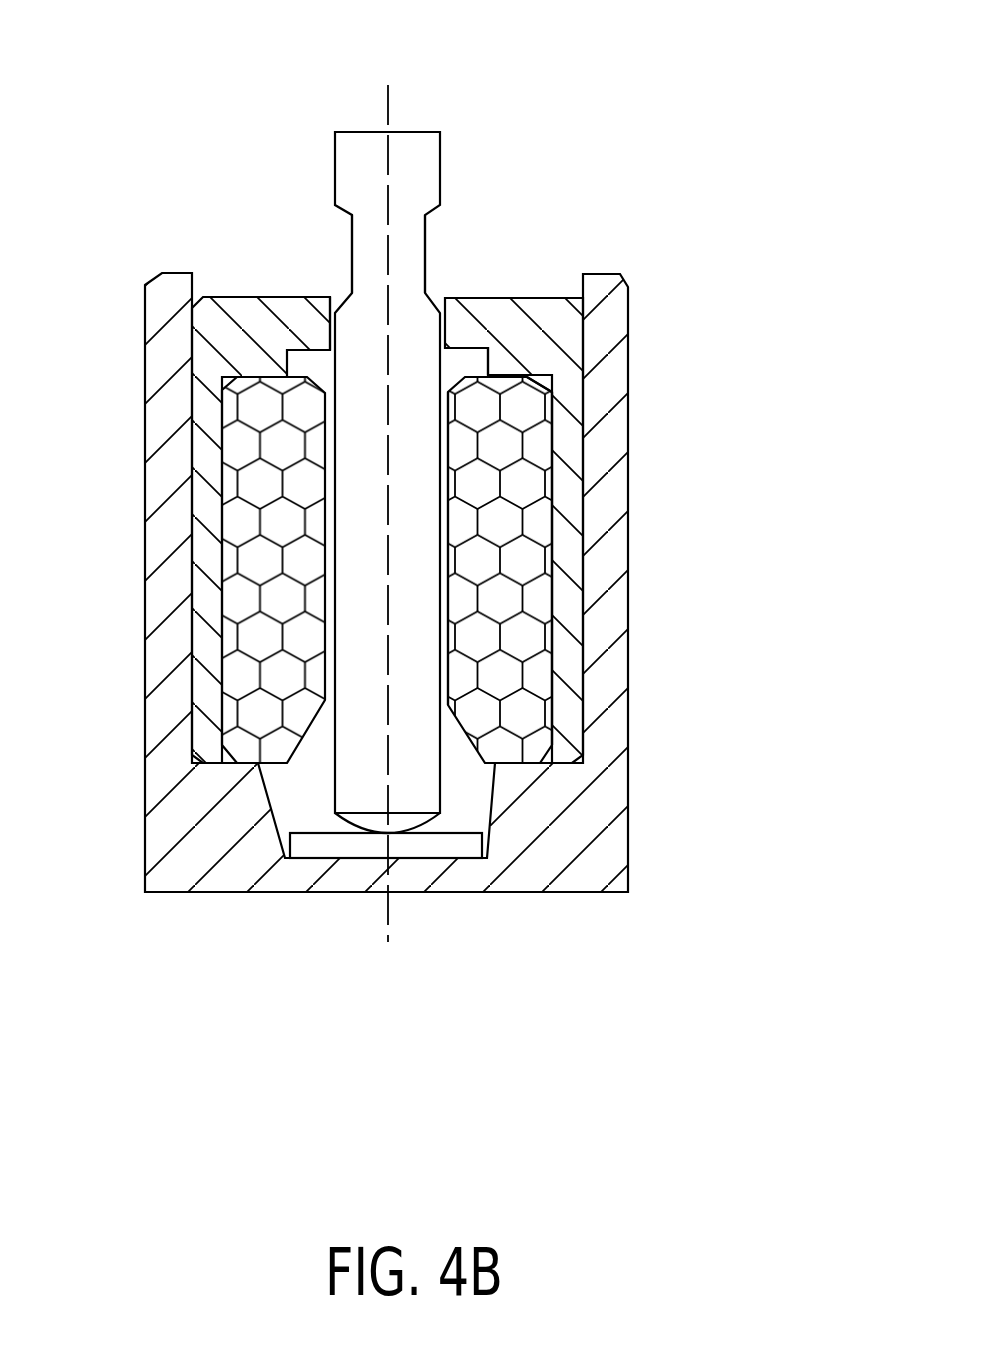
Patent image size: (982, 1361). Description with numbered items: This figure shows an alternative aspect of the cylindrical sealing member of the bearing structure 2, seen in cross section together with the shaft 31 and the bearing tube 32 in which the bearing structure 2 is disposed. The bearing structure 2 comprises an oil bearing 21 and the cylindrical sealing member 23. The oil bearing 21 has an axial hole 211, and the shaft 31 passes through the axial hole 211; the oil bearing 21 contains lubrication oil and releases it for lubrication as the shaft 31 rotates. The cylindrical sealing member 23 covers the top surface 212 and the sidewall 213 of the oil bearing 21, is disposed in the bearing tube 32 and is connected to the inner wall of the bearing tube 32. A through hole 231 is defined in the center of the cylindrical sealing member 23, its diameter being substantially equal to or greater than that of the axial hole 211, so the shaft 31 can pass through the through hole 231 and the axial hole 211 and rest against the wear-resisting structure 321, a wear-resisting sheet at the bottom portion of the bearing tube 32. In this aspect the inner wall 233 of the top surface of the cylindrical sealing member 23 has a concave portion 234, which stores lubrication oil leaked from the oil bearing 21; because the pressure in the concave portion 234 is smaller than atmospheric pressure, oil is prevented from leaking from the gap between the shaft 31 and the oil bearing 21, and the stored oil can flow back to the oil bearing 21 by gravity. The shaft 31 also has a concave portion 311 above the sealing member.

The bearing structure 2 is at (302, 122).
The oil bearing 21 is at (297, 383).
The axial hole 211 is at (468, 378).
The top surface 212 is at (534, 390).
The sidewall 213 is at (552, 523).
The cylindrical sealing member 23 is at (240, 310).
The through hole 231 is at (331, 305).
The inner wall 233 is at (443, 440).
The concave portion 234 is at (488, 360).
The shaft 31 is at (417, 143).
The concave portion 311 is at (427, 253).
The bearing tube 32 is at (603, 284).
The wear-resisting structure 321 is at (422, 845).